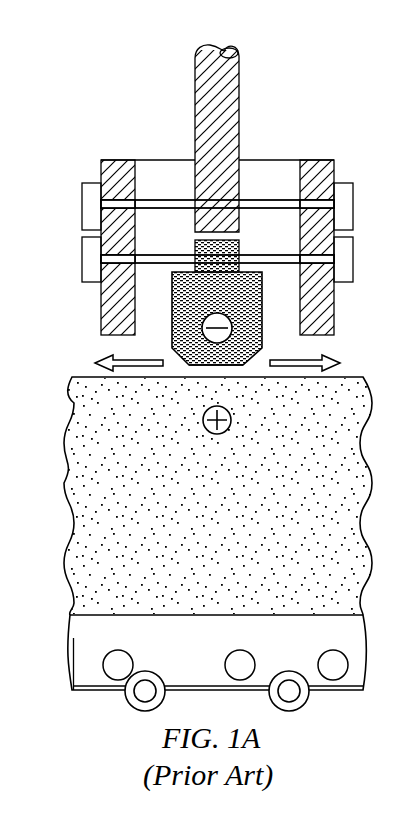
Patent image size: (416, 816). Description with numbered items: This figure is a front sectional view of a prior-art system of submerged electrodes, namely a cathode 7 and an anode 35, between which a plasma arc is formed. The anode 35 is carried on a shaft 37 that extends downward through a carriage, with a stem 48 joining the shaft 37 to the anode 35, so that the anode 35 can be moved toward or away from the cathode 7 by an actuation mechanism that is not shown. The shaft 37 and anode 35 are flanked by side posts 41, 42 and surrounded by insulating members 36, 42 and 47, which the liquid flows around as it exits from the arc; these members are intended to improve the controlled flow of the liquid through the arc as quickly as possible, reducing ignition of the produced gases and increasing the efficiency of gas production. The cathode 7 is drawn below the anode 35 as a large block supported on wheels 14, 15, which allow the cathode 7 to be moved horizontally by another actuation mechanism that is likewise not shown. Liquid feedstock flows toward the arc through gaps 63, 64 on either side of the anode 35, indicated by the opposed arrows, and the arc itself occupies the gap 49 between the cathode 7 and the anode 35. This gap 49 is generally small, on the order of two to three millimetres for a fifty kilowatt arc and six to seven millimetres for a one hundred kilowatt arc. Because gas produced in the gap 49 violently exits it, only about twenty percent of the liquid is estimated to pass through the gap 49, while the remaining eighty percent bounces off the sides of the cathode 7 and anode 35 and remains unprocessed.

The cathode 7 is at (72, 472).
The wheel 14 is at (150, 680).
The wheel 15 is at (285, 690).
The anode 35 is at (231, 322).
The insulating member 36 is at (258, 200).
The shaft 37 is at (237, 98).
The left post 41 is at (105, 313).
The insulating member 42 is at (328, 303).
The insulating member 47 is at (85, 210).
The stem 48 is at (205, 262).
The gap 49 is at (250, 366).
The gap 63 is at (100, 358).
The gap 64 is at (340, 360).